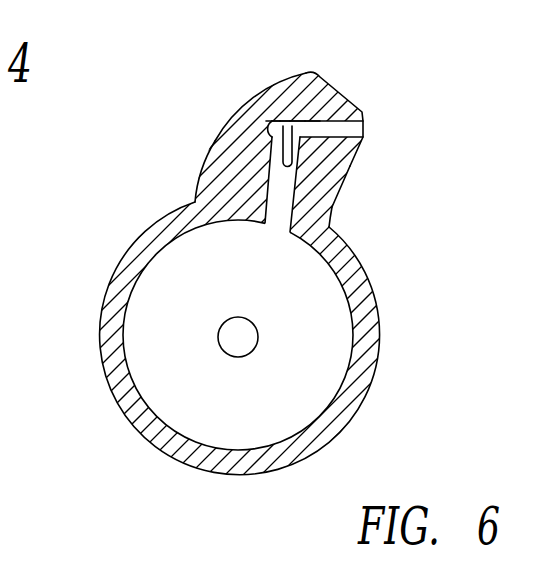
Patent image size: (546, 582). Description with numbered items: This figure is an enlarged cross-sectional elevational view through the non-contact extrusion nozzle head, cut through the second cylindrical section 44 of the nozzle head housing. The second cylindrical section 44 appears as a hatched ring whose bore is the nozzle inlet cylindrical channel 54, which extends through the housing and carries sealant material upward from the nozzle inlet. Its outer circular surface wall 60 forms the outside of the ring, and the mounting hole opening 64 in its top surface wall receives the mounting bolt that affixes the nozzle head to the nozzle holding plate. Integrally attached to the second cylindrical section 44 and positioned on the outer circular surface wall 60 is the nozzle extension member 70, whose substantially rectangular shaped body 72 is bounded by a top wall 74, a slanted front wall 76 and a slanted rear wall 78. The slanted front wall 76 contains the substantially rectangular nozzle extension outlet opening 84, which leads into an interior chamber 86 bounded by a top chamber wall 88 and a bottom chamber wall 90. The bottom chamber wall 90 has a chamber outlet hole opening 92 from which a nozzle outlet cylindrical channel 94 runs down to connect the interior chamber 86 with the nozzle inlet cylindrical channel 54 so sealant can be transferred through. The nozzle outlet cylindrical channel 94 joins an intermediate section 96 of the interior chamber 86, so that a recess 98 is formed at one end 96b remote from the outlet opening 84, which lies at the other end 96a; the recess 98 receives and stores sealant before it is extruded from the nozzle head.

The second cylindrical section 44 is at (193, 338).
The nozzle inlet cylindrical channel 54 is at (128, 390).
The outer circular surface wall 60 is at (98, 333).
The mounting hole opening 64 is at (233, 340).
The nozzle extension member 70 is at (392, 88).
The substantially rectangular shaped body 72 is at (212, 149).
The top wall 74 is at (333, 82).
The slanted front wall 76 is at (331, 214).
The slanted rear wall 78 is at (190, 186).
The nozzle extension outlet opening 84 is at (295, 151).
The interior chamber 86 is at (297, 120).
The top chamber wall 88 is at (313, 121).
The bottom chamber wall 90 is at (341, 184).
The chamber outlet hole opening 92 is at (274, 121).
The nozzle outlet cylindrical channel 94 is at (277, 226).
The intermediate section 96 is at (267, 174).
The other end of the interior chamber 96a is at (354, 159).
The one end of the interior chamber 96b is at (281, 121).
The recess 98 is at (260, 128).